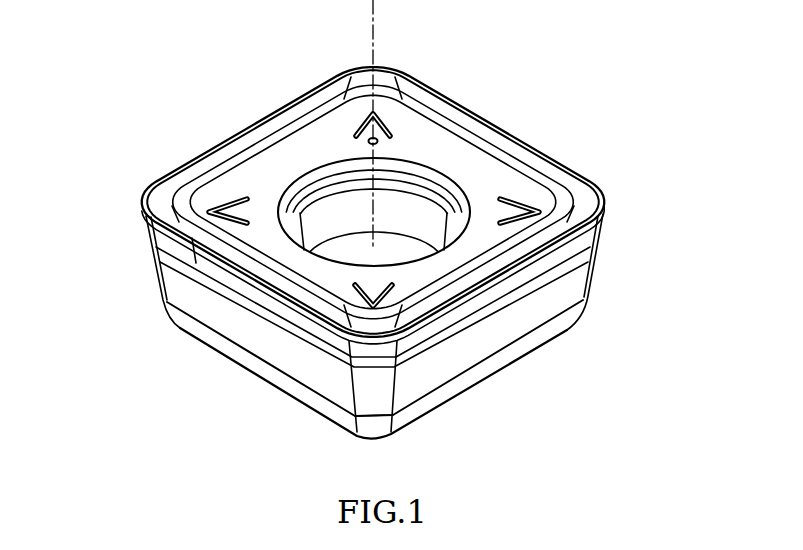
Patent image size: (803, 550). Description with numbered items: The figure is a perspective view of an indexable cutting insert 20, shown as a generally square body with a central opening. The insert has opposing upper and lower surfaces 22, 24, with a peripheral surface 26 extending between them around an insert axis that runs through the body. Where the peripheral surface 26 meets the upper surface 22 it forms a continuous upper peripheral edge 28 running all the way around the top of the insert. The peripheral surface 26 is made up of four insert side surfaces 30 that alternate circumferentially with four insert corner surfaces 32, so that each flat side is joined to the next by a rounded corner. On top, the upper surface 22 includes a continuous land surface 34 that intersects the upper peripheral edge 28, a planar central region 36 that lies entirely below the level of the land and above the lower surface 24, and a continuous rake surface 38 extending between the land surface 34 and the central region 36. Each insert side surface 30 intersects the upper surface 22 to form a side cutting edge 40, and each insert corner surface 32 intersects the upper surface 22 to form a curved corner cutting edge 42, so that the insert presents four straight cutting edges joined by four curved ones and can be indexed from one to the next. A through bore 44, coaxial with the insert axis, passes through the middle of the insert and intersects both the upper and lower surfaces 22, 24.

The indexable cutting insert 20 is at (549, 135).
The upper surface 22 is at (474, 182).
The lower surface 24 is at (475, 388).
The peripheral surface 26 is at (507, 332).
The upper peripheral edge 28 is at (457, 100).
The insert side surface 30 is at (247, 327).
The insert corner surface 32 is at (357, 417).
The land surface 34 is at (143, 197).
The central region 36 is at (261, 188).
The rake surface 38 is at (190, 186).
The side cutting edge 40 is at (510, 278).
The corner cutting edge 42 is at (373, 397).
The through bore 44 is at (338, 200).